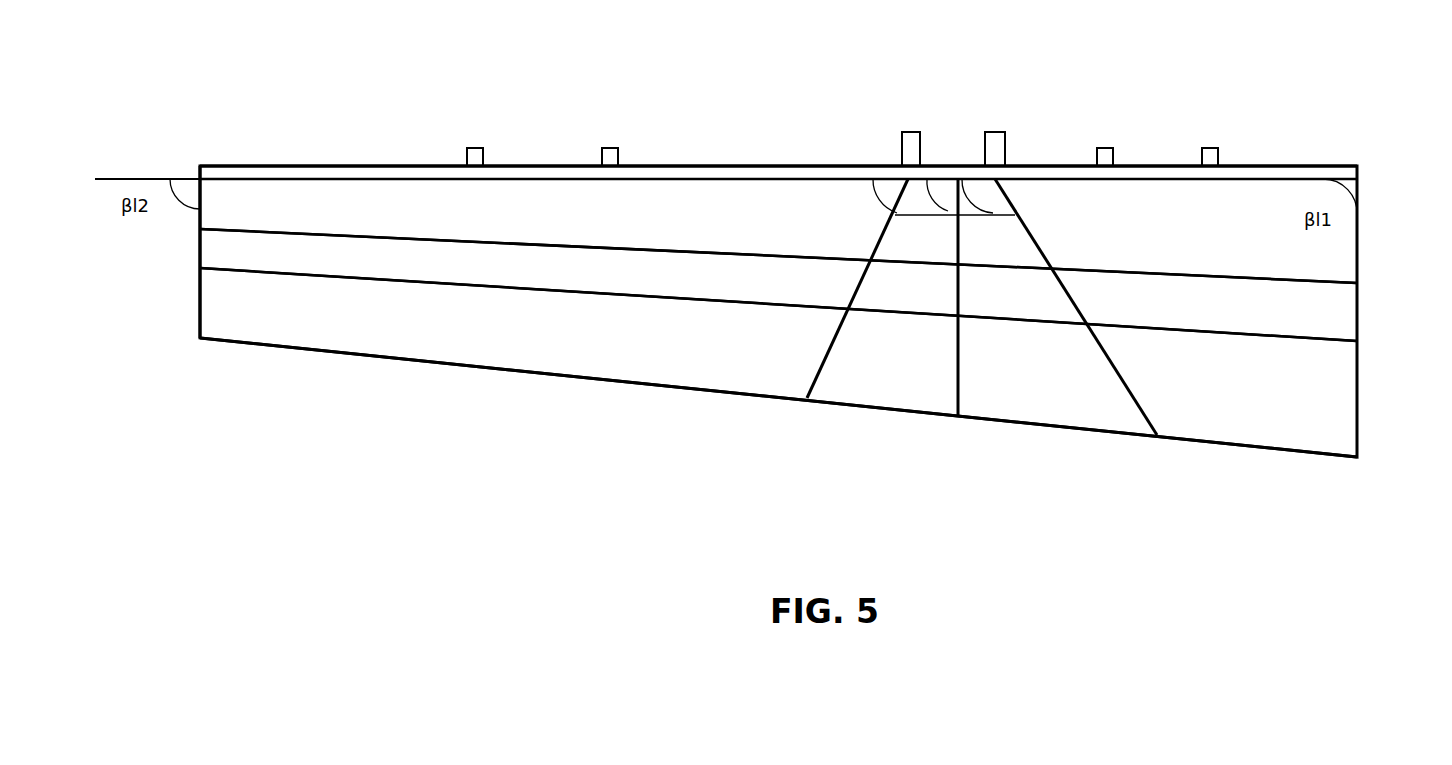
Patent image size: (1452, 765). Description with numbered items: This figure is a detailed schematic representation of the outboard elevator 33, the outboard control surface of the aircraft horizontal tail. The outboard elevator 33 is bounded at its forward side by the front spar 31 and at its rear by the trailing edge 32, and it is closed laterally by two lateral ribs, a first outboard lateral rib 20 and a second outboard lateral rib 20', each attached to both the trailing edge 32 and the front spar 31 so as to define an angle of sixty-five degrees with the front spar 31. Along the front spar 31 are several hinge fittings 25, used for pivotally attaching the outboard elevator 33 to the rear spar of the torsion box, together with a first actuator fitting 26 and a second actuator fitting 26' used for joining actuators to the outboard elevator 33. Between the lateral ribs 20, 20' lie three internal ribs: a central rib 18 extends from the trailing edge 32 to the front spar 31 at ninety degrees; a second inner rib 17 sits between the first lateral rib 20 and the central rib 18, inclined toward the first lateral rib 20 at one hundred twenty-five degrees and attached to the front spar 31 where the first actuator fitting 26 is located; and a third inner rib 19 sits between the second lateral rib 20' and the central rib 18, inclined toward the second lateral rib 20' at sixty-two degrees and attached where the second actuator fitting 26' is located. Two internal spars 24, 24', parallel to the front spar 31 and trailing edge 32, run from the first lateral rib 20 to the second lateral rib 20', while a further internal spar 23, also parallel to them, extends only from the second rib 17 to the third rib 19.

The outboard elevator 33 is at (203, 133).
The first outboard lateral rib 20 is at (816, 311).
The second outboard lateral rib 20' is at (155, 252).
The front spar 31 is at (741, 166).
The trailing edge 32 is at (672, 387).
The internal spar 24 is at (778, 376).
The internal spar 24' is at (778, 348).
The hinge fitting 25 is at (480, 147).
The first actuator fitting 26 is at (1016, 110).
The second actuator fitting 26' is at (930, 107).
The internal spar 23 is at (907, 203).
The third inner rib 19 is at (830, 352).
The central rib 18 is at (960, 378).
The second inner rib 17 is at (1122, 385).